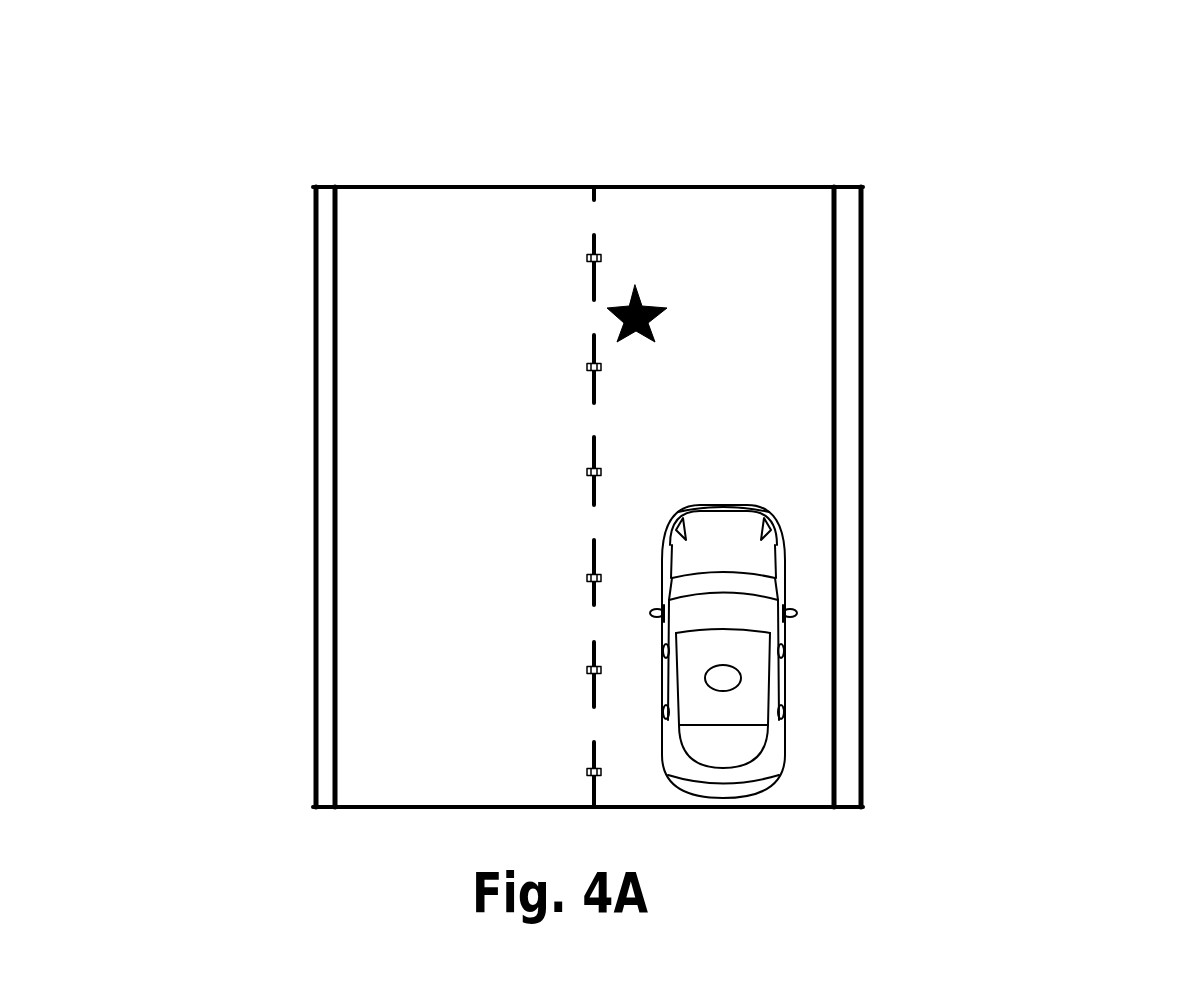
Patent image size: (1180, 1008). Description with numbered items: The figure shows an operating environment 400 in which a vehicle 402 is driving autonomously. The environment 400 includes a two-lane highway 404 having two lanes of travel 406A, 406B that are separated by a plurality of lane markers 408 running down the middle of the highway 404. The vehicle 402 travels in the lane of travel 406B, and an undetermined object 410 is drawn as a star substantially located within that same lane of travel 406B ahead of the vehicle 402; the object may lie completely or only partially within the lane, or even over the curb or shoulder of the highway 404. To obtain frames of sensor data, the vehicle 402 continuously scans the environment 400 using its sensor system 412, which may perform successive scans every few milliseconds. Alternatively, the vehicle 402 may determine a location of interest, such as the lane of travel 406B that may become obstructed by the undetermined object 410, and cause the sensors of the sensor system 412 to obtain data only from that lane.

The environment 400 is at (1122, 64).
The vehicle 402 is at (786, 552).
The two-lane highway 404 is at (314, 187).
The lane of travel 406A is at (405, 208).
The lane of travel 406B is at (752, 210).
The lane markers 408 is at (600, 253).
The undetermined object 410 is at (665, 306).
The sensor system 412 is at (742, 676).